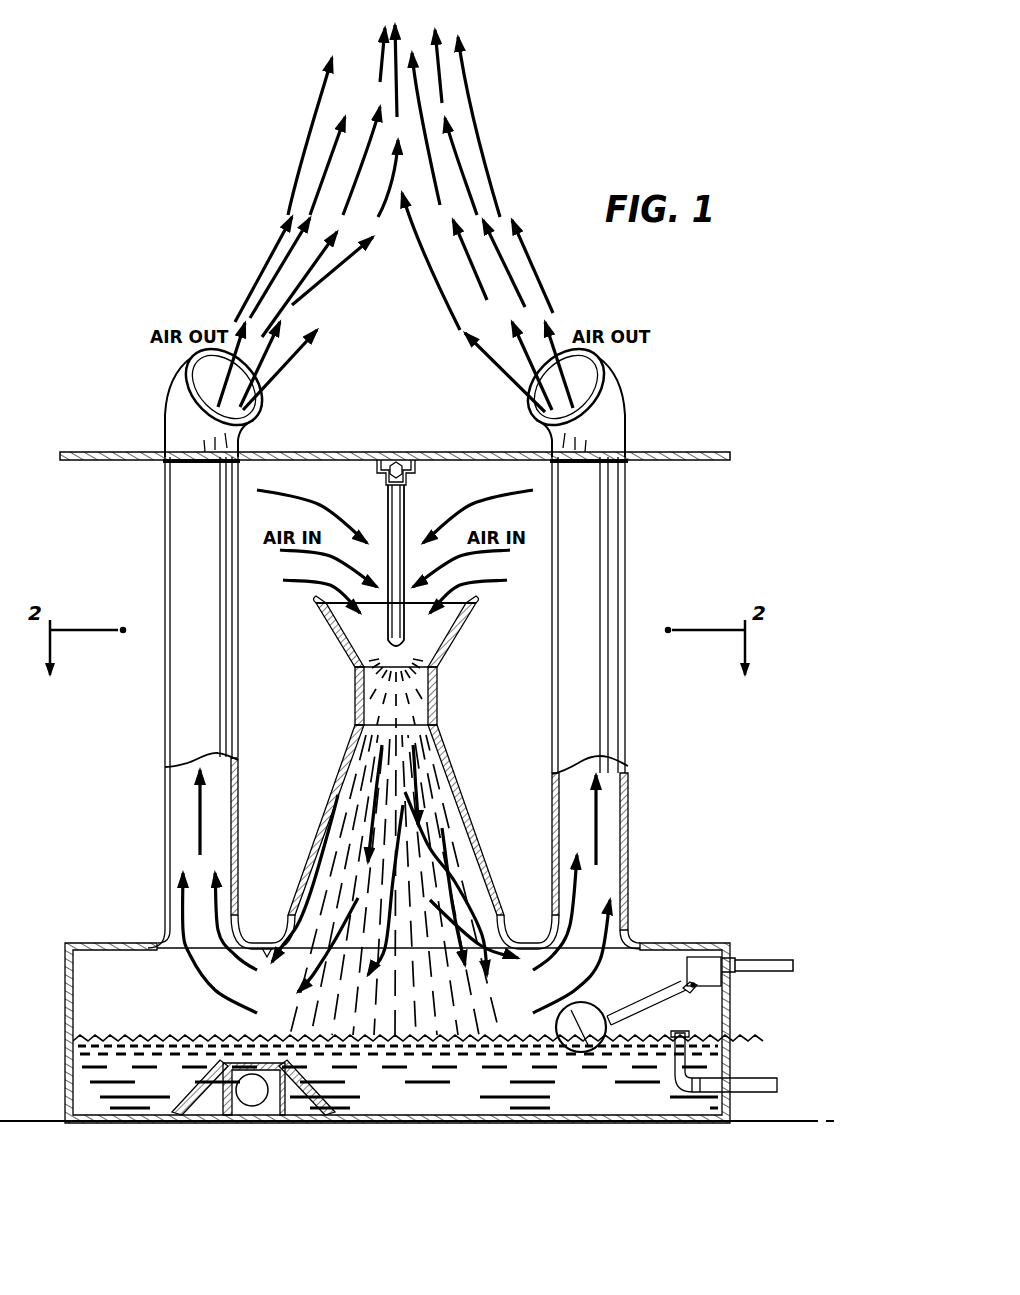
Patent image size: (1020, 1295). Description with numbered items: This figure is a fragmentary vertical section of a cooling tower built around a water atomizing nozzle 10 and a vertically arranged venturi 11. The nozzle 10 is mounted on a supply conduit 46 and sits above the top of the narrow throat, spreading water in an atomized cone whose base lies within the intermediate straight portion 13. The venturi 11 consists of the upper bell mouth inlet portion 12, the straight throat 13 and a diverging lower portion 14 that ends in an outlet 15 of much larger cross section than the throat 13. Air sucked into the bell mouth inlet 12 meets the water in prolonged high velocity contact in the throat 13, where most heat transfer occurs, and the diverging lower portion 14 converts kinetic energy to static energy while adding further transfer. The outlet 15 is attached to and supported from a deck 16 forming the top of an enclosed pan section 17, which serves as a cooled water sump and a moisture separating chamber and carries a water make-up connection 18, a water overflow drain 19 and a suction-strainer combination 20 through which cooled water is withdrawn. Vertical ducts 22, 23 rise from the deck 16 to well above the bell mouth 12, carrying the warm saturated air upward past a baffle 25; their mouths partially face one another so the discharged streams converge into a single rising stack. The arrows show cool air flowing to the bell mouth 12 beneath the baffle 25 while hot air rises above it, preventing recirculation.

The water atomizing nozzle 10 is at (405, 636).
The venturi 11 is at (411, 815).
The upper bell mouth inlet portion 12 is at (457, 638).
The intermediate straight portion 13 is at (440, 696).
The diverging lower portion 14 is at (470, 824).
The outlet 15 is at (265, 947).
The deck 16 is at (110, 944).
The pan section 17 is at (750, 1003).
The water make-up connection 18 is at (707, 956).
The water overflow drain 19 is at (686, 1064).
The suction-strainer combination 20 is at (255, 1100).
The vertical duct 22 is at (186, 548).
The vertical duct 23 is at (608, 560).
The baffle 25 is at (695, 452).
The supply conduit 46 is at (404, 508).